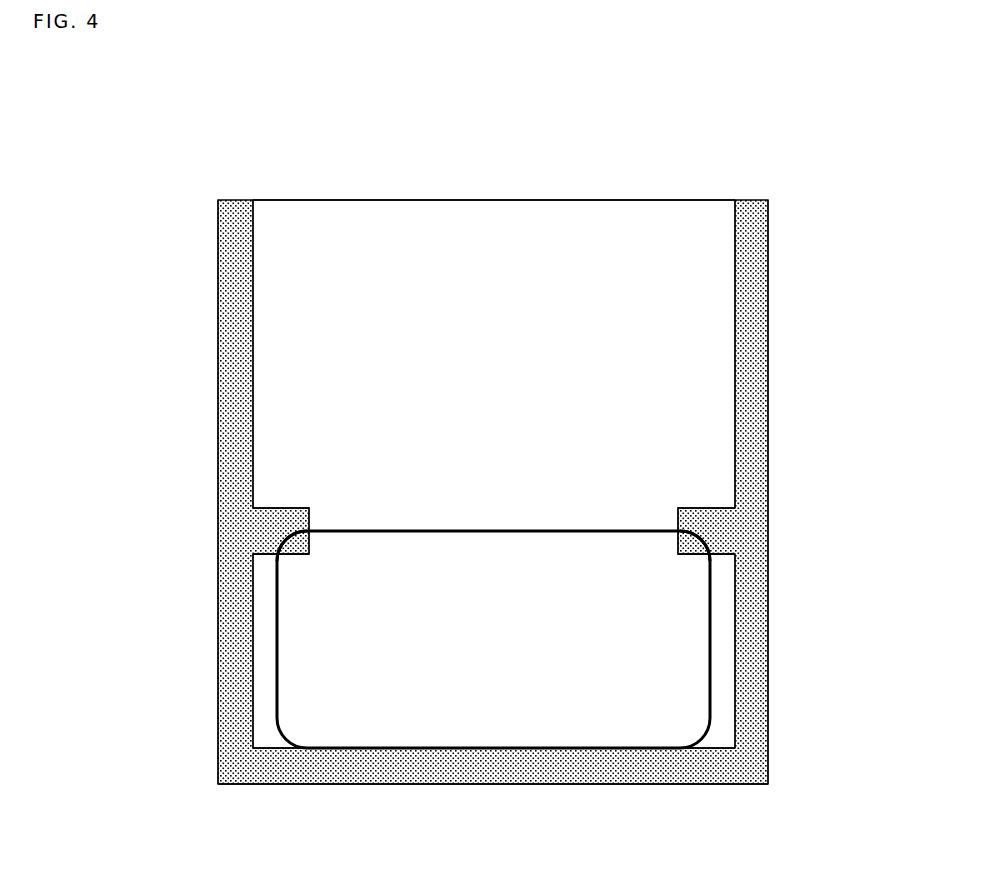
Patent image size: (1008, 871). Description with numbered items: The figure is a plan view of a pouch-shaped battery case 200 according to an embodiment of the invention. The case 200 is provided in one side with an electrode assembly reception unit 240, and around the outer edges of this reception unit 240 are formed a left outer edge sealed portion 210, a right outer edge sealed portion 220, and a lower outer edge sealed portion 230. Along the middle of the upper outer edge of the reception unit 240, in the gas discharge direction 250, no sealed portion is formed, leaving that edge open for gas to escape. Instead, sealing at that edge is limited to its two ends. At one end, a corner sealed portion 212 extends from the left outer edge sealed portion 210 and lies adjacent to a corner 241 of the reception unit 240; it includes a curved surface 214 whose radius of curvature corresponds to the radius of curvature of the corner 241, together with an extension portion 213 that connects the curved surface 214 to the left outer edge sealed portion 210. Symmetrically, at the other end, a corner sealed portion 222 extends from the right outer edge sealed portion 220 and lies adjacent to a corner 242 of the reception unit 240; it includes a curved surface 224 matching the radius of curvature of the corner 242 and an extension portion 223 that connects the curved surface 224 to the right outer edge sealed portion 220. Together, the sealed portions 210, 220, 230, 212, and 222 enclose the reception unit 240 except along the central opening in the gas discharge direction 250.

The pouch-shaped battery case 200 is at (143, 101).
The left outer edge sealed portion 210 is at (190, 451).
The corner sealed portion 212 is at (275, 508).
The extension portion 213 is at (262, 557).
The curved surface 214 is at (285, 540).
The right outer edge sealed portion 220 is at (797, 452).
The corner sealed portion 222 is at (705, 508).
The extension portion 223 is at (723, 556).
The curved surface 224 is at (695, 532).
The lower outer edge sealed portion 230 is at (522, 785).
The electrode assembly reception unit 240 is at (710, 640).
The corner of the electrode assembly reception unit 241 is at (306, 560).
The corner of the electrode assembly reception unit 242 is at (676, 560).
The gas discharge direction 250 is at (518, 182).